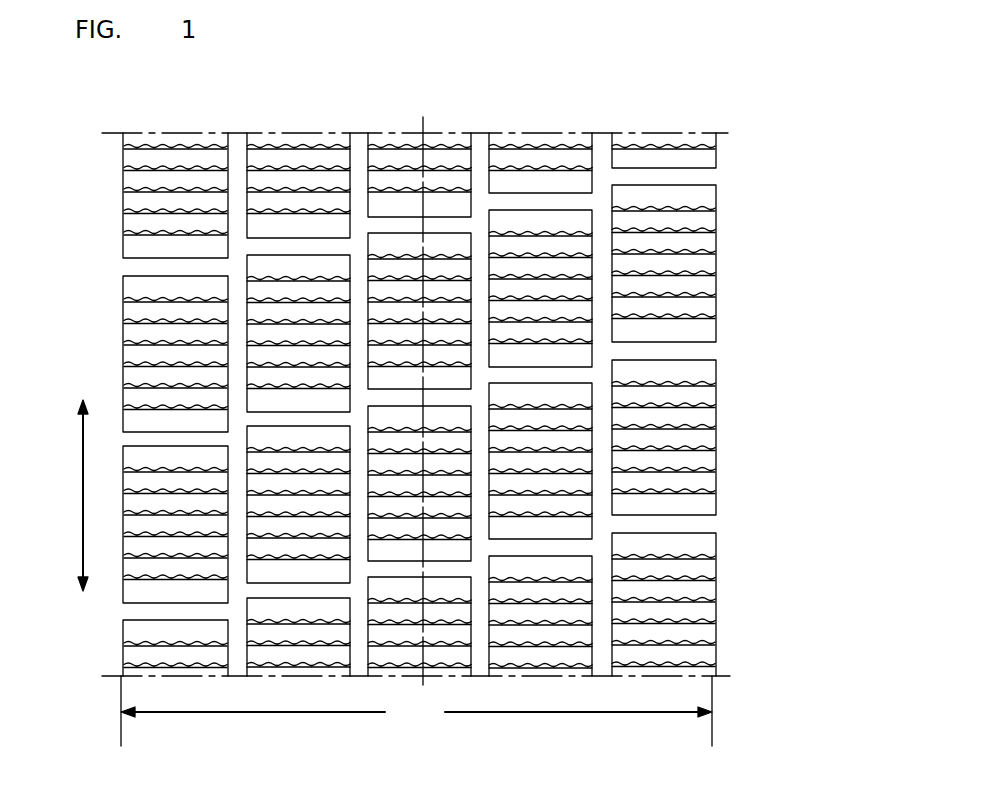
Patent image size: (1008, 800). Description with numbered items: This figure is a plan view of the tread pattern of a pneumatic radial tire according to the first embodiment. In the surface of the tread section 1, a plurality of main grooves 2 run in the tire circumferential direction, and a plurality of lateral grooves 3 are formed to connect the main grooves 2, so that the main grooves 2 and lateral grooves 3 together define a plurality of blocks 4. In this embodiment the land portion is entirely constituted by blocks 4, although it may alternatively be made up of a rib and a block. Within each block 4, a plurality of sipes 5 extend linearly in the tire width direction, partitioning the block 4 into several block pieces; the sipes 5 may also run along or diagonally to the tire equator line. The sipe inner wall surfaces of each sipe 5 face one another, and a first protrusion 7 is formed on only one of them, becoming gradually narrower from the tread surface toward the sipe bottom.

The tread section 1 is at (630, 92).
The main groove 2 is at (360, 148).
The lateral groove 3 is at (310, 418).
The block 4 is at (688, 330).
The sipe 5 is at (705, 600).
The first protrusion 7 is at (697, 488).